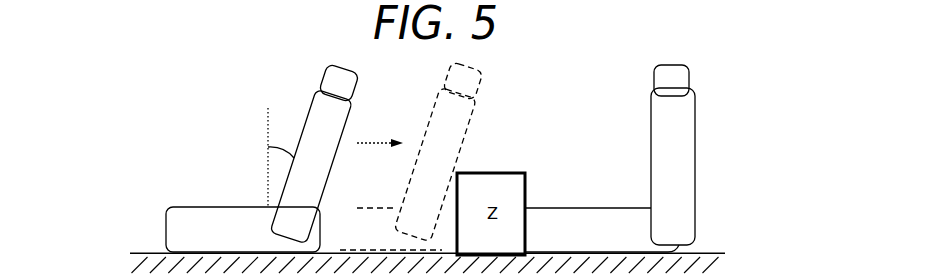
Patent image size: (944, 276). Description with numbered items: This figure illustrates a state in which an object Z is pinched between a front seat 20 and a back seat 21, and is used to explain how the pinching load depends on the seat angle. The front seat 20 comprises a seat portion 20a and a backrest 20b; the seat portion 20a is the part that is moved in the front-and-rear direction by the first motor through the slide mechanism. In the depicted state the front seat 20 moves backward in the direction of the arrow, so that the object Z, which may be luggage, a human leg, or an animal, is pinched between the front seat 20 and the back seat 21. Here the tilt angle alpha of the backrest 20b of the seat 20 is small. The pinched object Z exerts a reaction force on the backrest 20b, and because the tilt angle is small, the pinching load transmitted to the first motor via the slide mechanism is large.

The seat 20 is at (316, 156).
The seat portion 20a is at (166, 225).
The backrest 20b is at (317, 94).
The back seat 21 is at (722, 133).